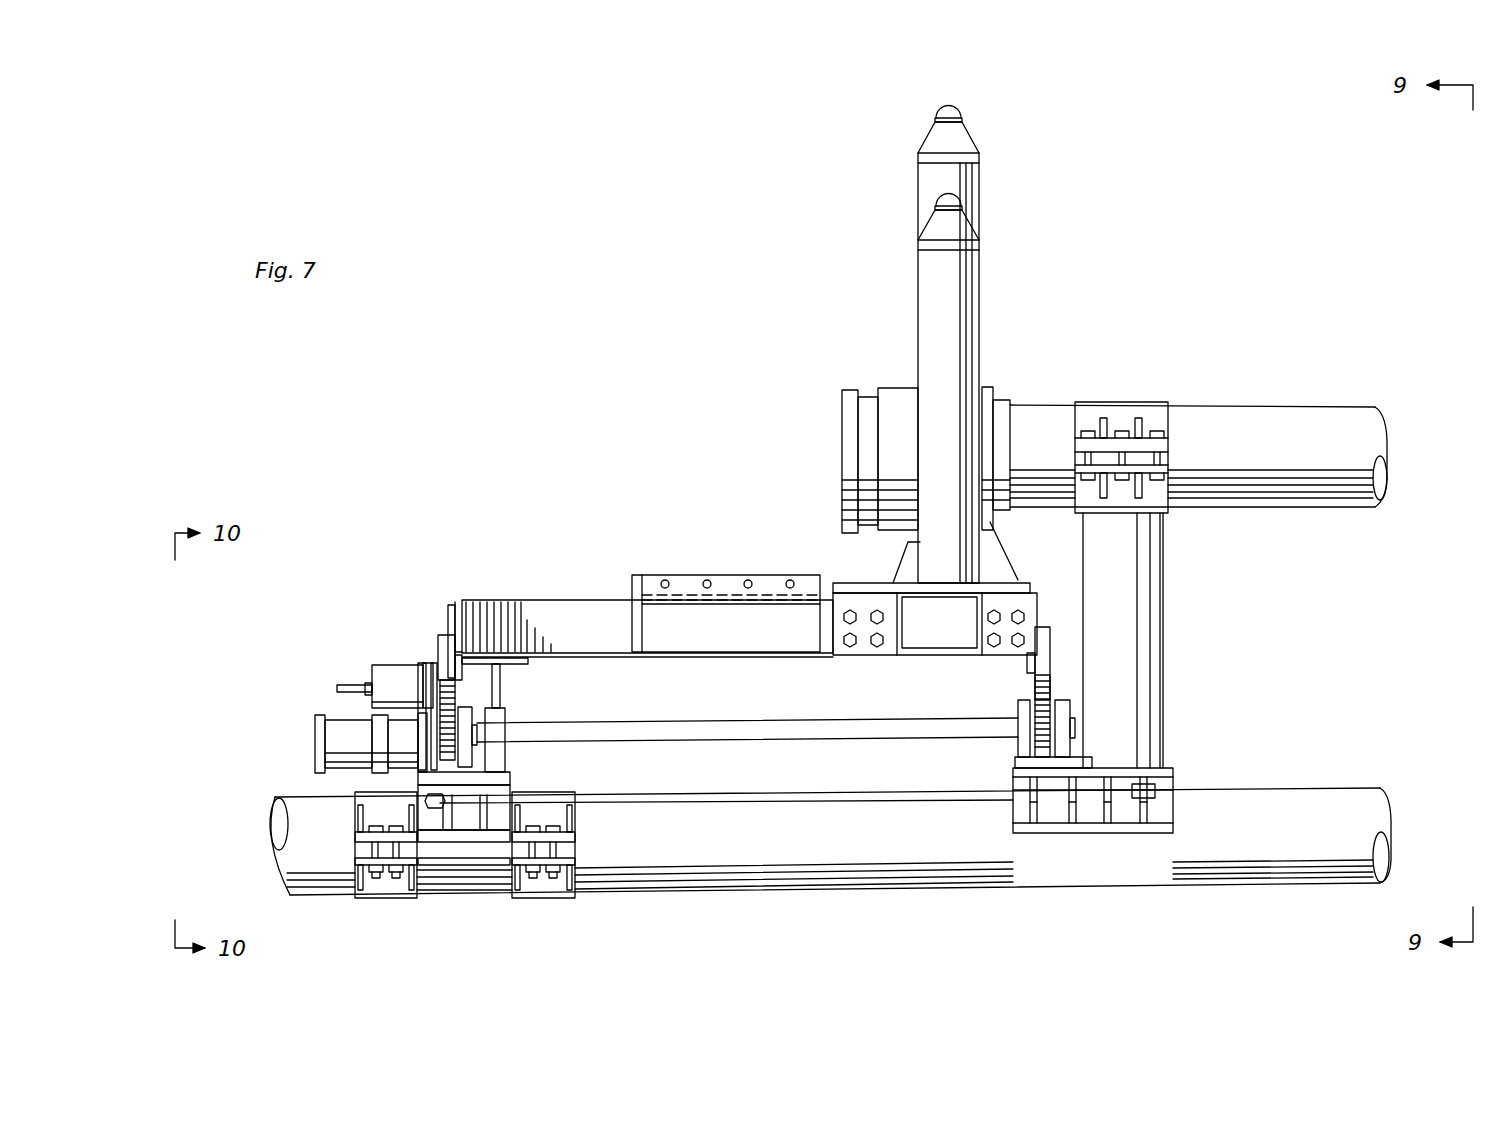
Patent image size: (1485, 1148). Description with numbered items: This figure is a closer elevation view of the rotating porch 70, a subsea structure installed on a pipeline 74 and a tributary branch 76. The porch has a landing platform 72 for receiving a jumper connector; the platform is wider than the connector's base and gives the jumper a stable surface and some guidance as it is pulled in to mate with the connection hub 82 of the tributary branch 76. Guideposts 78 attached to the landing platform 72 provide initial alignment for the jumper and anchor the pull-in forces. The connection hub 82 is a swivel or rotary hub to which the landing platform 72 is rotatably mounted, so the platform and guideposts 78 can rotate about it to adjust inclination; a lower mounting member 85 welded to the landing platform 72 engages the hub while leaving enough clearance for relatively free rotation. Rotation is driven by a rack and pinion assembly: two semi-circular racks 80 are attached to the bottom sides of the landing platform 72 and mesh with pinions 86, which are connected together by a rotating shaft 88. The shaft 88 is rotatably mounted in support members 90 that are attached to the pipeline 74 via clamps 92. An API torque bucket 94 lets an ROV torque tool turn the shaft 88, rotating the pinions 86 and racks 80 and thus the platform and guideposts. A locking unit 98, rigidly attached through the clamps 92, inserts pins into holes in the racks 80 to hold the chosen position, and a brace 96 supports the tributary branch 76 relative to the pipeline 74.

The rotating porch 70 is at (608, 366).
The landing platform 72 is at (553, 597).
The pipeline 74 is at (803, 897).
The tributary branch 76 is at (1278, 405).
The guideposts 78 is at (982, 186).
The semi-circular racks 80 is at (443, 650).
The connection hub 82 is at (890, 388).
The lower mounting member 85 is at (998, 545).
The pinions 86 is at (470, 712).
The rotating shaft 88 is at (760, 723).
The support members 90 is at (460, 745).
The clamps 92 is at (384, 900).
The API torque bucket 94 is at (312, 735).
The brace 96 is at (1165, 571).
The locking unit 98 is at (396, 672).